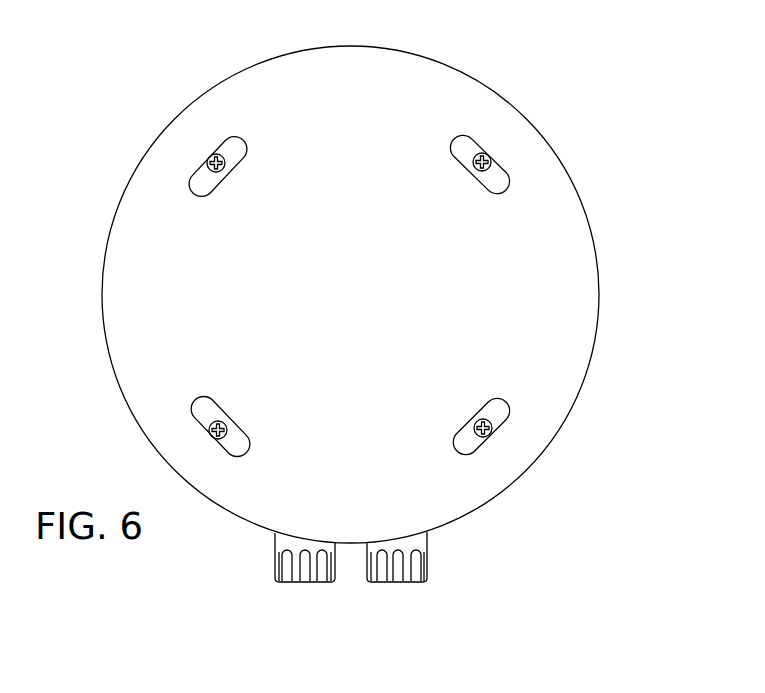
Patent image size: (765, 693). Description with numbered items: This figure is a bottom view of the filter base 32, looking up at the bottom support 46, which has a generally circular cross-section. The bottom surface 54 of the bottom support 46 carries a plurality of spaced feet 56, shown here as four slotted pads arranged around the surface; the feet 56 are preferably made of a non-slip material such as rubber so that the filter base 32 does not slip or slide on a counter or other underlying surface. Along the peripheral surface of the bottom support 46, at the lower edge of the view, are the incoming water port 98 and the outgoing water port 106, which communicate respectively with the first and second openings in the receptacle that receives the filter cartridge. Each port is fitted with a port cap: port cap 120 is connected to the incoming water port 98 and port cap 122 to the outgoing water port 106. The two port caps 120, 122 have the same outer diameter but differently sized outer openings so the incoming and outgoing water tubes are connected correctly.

The filter base 32 is at (593, 135).
The bottom support 46 is at (553, 348).
The bottom surface 54 is at (340, 300).
The feet 56 is at (200, 183).
The incoming water port 98 is at (441, 564).
The outgoing water port 106 is at (262, 566).
The port cap 120 is at (400, 573).
The port cap 122 is at (303, 573).